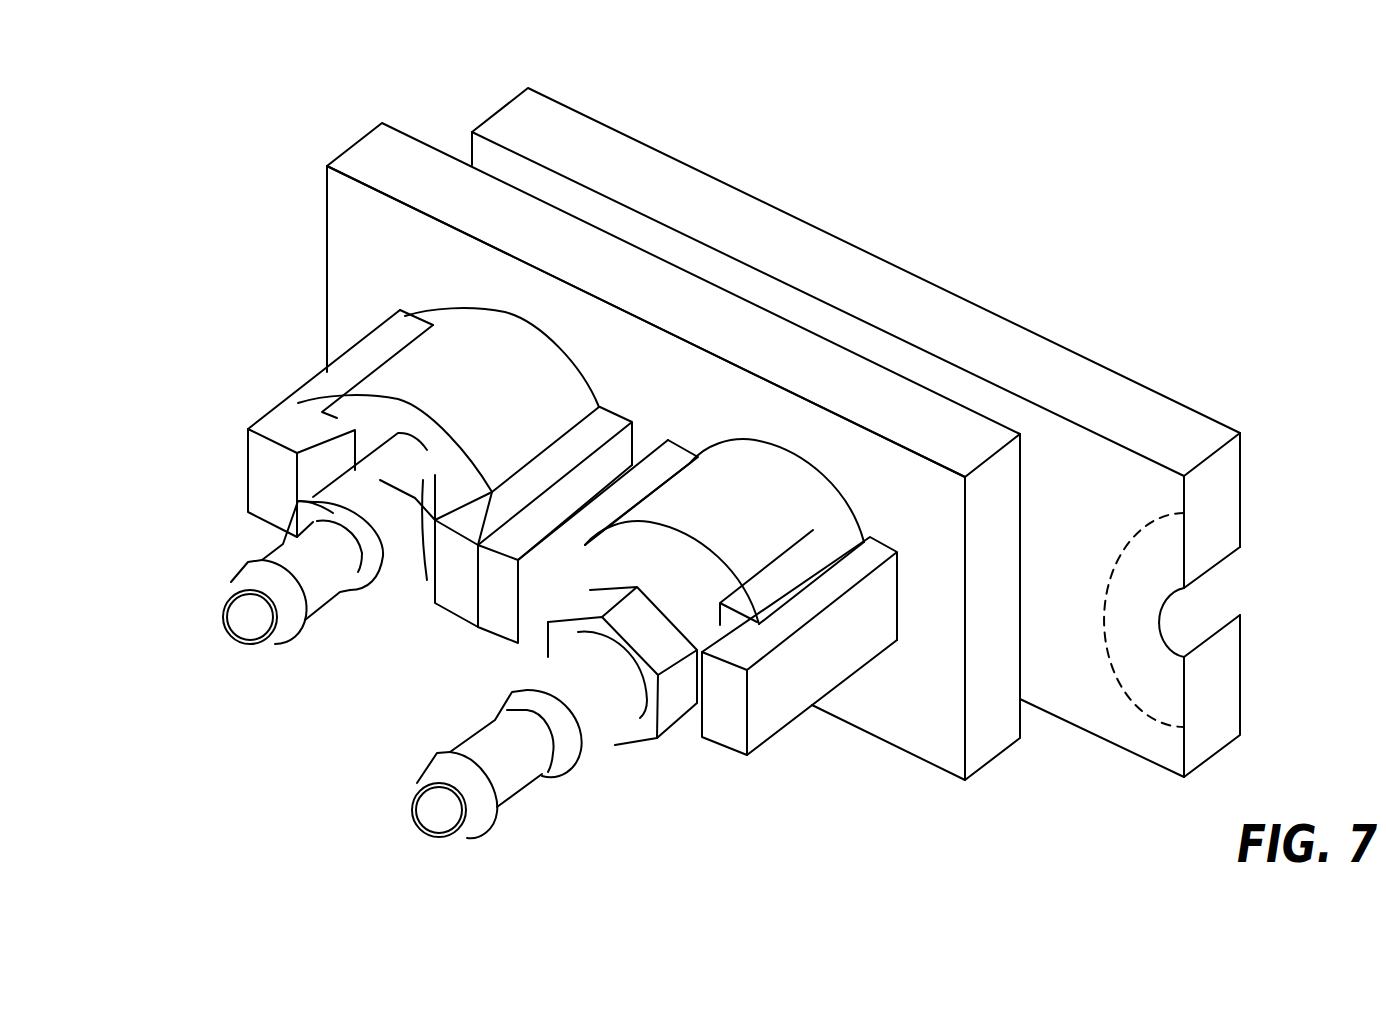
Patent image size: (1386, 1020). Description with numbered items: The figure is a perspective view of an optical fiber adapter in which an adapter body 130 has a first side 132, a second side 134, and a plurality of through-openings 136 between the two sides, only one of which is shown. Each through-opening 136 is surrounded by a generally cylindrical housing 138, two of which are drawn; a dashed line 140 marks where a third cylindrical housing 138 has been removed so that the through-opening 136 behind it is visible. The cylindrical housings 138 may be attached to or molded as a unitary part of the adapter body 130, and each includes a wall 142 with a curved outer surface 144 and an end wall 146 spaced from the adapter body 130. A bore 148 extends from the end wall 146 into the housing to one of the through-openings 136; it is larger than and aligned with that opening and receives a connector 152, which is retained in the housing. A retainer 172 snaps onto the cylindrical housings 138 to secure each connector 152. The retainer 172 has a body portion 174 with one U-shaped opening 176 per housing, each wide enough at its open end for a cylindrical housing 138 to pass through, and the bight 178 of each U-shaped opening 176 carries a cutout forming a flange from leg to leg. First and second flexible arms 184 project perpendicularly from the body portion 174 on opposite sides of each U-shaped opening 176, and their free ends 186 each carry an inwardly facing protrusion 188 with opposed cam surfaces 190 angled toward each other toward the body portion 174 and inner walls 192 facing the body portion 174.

The adapter body 130 is at (1155, 420).
The first side 132 is at (1162, 748).
The second side 134 is at (1240, 660).
The through-opening 136 is at (1203, 607).
The cylindrical housing 138 is at (437, 362).
The dashed line 140 is at (1133, 692).
The wall 142 is at (335, 378).
The curved outer surface 144 is at (470, 330).
The end wall 146 is at (255, 410).
The bore 148 is at (425, 415).
The connector 152 is at (310, 512).
The retainer 172 is at (382, 145).
The body portion 174 is at (345, 195).
The U-shaped opening 176 is at (845, 725).
The bight 178 is at (508, 317).
The flexible arm 184 is at (467, 608).
The free end 186 is at (255, 460).
The protrusion 188 is at (505, 665).
The cam surface 190 is at (323, 453).
The inner wall 192 is at (433, 570).